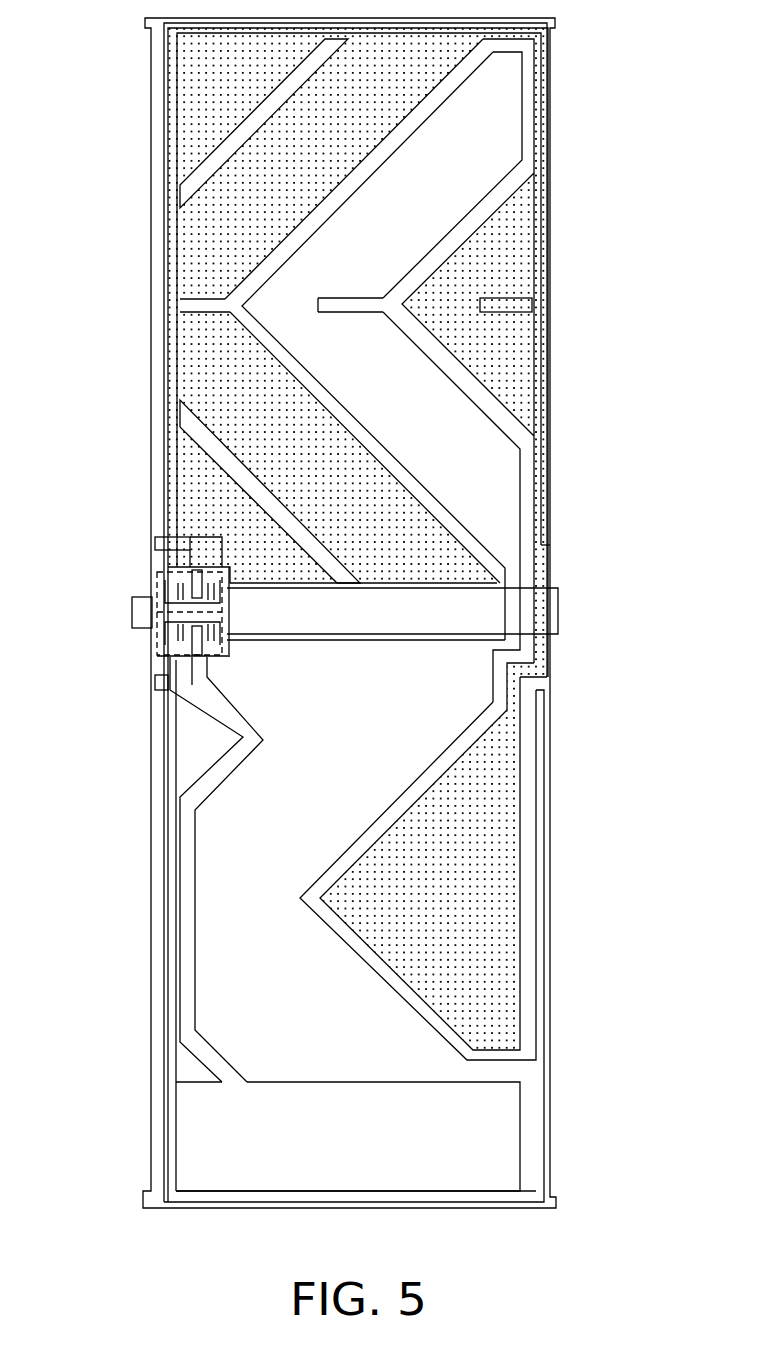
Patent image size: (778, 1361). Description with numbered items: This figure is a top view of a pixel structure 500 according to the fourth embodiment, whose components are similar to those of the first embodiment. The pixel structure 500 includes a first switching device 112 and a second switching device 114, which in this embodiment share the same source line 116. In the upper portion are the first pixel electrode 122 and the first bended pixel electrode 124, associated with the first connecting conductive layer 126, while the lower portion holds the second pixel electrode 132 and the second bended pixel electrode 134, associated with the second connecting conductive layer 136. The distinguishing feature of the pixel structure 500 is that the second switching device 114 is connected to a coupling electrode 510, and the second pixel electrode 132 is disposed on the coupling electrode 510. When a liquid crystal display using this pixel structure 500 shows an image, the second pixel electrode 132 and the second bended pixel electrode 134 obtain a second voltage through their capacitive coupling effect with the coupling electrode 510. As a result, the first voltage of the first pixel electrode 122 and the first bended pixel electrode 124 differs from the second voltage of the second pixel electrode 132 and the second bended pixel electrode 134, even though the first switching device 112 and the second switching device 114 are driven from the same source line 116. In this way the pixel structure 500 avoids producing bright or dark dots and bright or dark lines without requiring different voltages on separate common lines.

The pixel structure 500 is at (630, 1252).
The first pixel electrode 122 is at (205, 247).
The first bended pixel electrode 124 is at (482, 920).
The first connecting conductive layer 126 is at (513, 602).
The second pixel electrode 132 is at (230, 900).
The second bended pixel electrode 134 is at (481, 128).
The second connecting conductive layer 136 is at (543, 653).
The first switching device 112 is at (152, 587).
The second switching device 114 is at (152, 638).
The source line 116 is at (180, 612).
The coupling electrode 510 is at (470, 1135).